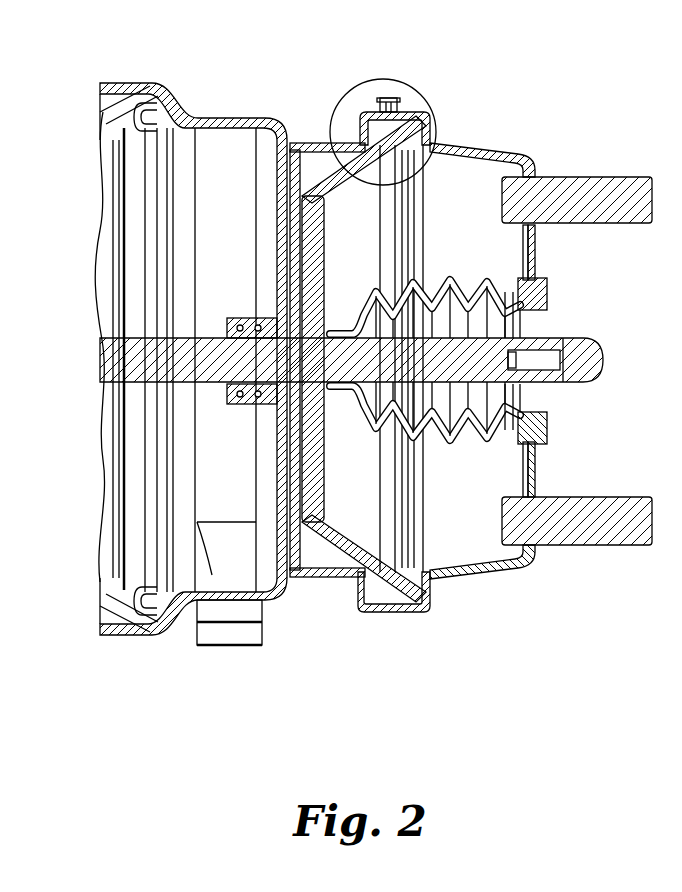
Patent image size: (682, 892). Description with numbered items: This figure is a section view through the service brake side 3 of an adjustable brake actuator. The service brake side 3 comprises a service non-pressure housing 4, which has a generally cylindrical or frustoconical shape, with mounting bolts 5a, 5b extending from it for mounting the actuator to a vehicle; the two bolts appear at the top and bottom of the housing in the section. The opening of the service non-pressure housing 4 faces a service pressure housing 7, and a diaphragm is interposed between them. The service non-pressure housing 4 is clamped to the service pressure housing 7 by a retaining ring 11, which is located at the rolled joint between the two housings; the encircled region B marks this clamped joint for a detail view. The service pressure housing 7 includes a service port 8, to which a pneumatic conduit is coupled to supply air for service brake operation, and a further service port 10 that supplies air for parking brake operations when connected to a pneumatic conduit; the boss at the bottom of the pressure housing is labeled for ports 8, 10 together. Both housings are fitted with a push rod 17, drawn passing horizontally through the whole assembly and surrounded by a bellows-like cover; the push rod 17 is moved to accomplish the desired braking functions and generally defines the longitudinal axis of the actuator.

The service brake side 3 is at (377, 407).
The service non-pressure housing 4 is at (510, 565).
The mounting bolt 5a is at (592, 222).
The mounting bolt 5b is at (628, 497).
The service pressure housing 7 is at (308, 147).
The service port 8 is at (207, 389).
The service port 10 is at (233, 645).
The retaining ring 11 is at (405, 118).
The push rod 17 is at (463, 347).
The detail region B is at (437, 105).